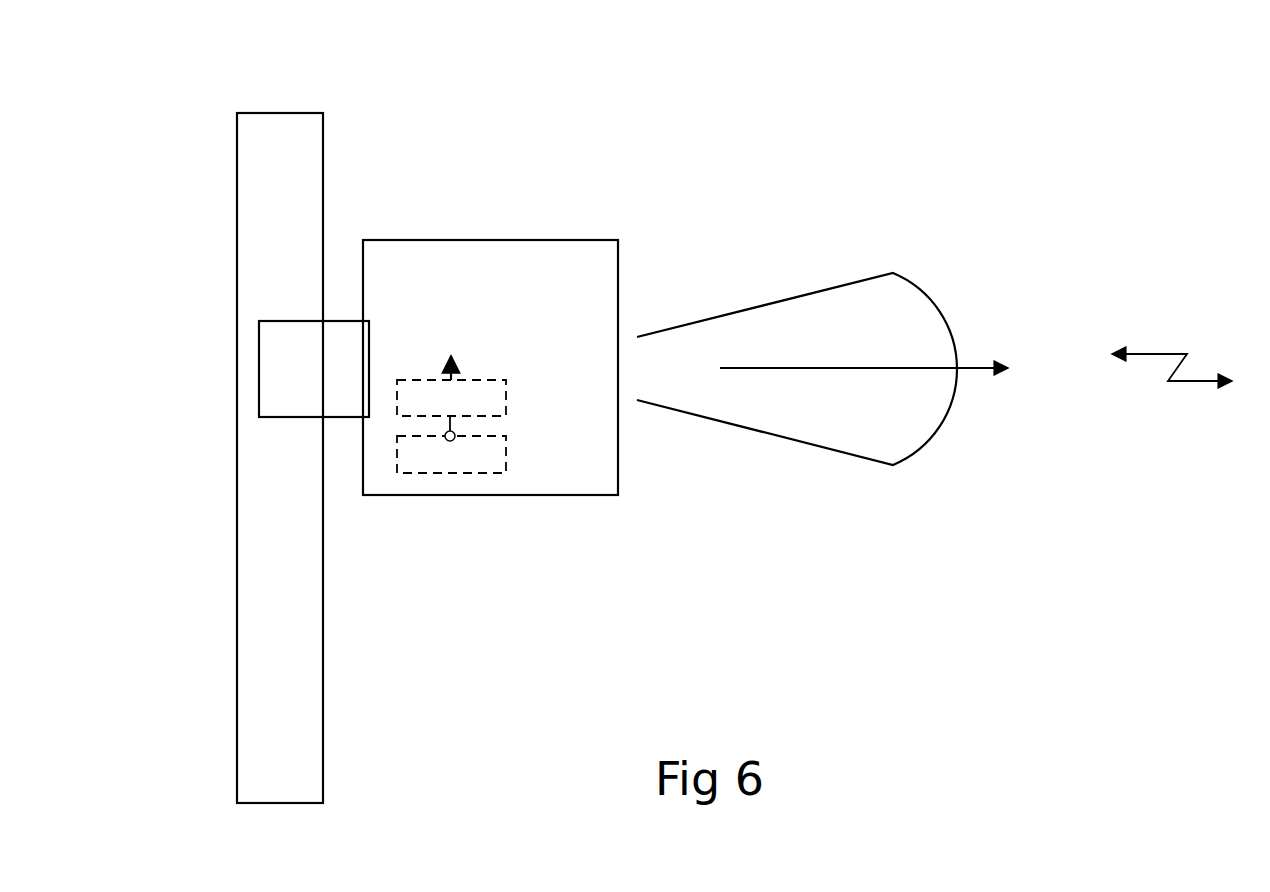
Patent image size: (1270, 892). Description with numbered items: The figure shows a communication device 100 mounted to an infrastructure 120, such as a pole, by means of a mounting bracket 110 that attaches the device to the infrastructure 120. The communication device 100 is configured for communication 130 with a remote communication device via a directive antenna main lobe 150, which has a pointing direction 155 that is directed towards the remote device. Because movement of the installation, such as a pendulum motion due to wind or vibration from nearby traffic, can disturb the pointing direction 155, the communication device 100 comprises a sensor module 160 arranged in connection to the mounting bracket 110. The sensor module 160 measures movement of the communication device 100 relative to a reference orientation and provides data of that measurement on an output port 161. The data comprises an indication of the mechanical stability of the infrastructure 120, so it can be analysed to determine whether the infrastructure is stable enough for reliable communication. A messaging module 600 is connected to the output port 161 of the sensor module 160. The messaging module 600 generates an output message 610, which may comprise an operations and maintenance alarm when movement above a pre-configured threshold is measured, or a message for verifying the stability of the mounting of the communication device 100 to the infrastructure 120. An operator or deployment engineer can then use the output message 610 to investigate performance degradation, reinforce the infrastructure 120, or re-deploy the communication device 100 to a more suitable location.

The infrastructure 120 is at (280, 113).
The mounting bracket 110 is at (259, 392).
The communication device 100 is at (487, 240).
The messaging module 600 is at (506, 393).
The sensor module 160 is at (506, 455).
The output port 161 is at (466, 428).
The output message 610 is at (426, 360).
The antenna main lobe 150 is at (927, 259).
The pointing direction 155 is at (887, 347).
The communication 130 is at (1172, 351).